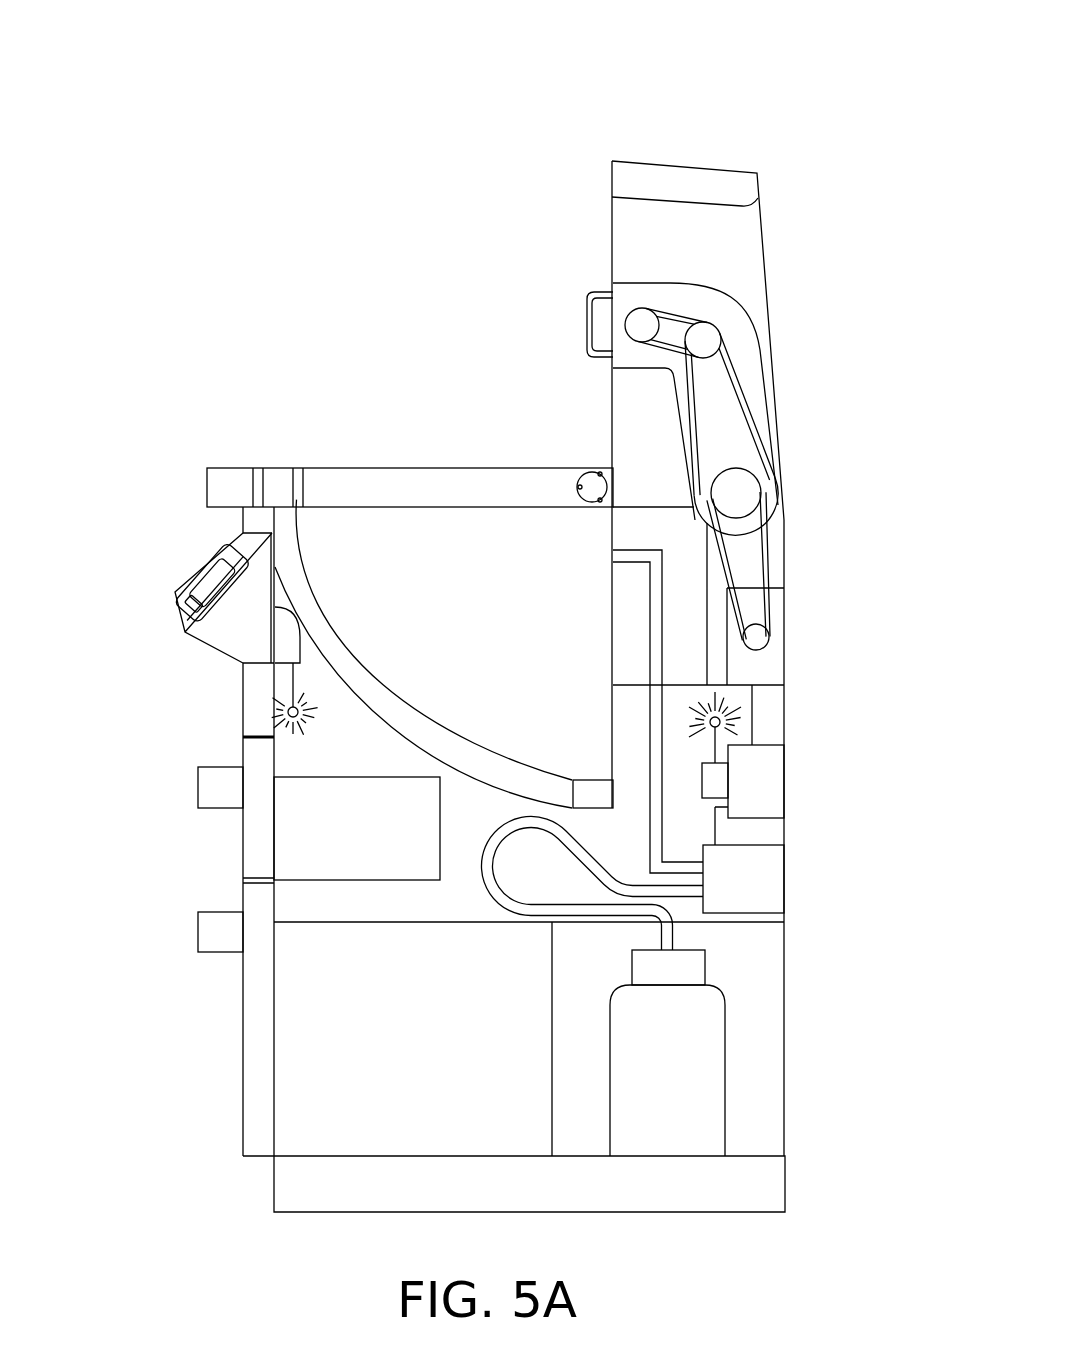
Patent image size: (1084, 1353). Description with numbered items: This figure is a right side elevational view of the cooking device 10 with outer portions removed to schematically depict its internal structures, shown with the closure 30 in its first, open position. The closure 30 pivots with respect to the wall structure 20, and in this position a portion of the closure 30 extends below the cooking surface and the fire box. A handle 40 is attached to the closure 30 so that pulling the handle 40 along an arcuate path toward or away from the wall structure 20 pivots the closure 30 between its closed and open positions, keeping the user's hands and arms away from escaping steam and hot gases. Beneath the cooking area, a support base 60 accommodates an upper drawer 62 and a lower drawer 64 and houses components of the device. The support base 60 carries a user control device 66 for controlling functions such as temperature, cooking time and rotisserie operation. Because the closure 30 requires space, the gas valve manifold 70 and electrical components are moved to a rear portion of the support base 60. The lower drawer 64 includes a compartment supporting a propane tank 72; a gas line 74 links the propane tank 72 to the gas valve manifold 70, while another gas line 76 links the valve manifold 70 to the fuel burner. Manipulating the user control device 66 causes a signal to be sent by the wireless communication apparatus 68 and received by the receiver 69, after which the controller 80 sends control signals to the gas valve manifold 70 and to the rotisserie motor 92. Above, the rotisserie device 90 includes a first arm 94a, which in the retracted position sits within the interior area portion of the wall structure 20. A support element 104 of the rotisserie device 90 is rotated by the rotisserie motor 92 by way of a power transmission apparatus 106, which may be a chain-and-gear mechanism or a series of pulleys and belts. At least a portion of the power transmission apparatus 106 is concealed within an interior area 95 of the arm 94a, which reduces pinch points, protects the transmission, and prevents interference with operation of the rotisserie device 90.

The cooking device 10 is at (407, 87).
The wall structure 20 is at (773, 160).
The closure 30 is at (379, 455).
The handle 40 is at (207, 480).
The support base 60 is at (820, 950).
The drawer 62 is at (243, 851).
The lower drawer 64 is at (243, 1023).
The user control device 66 is at (166, 564).
The wireless communication apparatus 68 is at (313, 655).
The receiver 69 is at (715, 777).
The gas valve manifold 70 is at (772, 873).
The propane tank 72 is at (684, 1091).
The gas line 74 is at (483, 889).
The gas line 76 is at (650, 712).
The controller 80 is at (772, 799).
The rotisserie device 90 is at (798, 375).
The rotisserie motor 92 is at (773, 610).
The first arm 94a is at (637, 283).
The interior area 95 is at (748, 357).
The support element 104 is at (640, 325).
The power transmission apparatus 106 is at (768, 427).